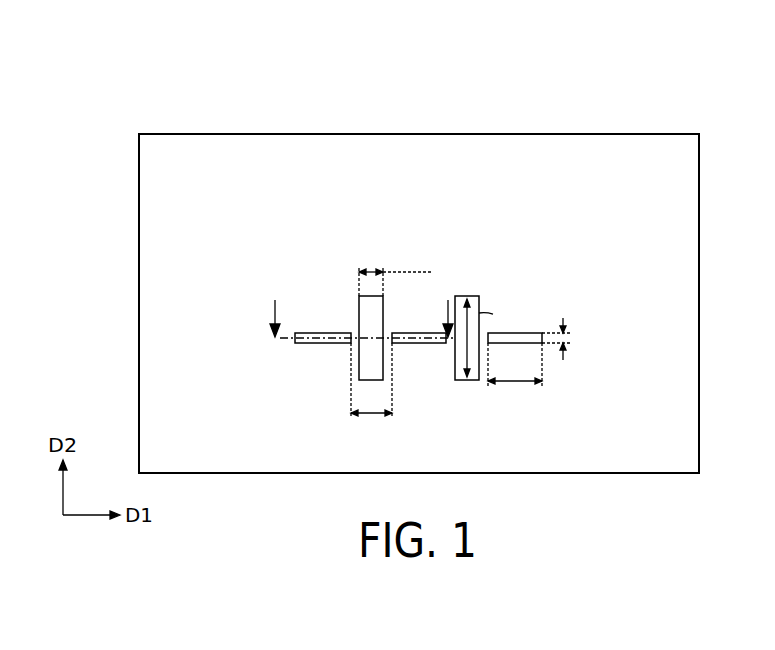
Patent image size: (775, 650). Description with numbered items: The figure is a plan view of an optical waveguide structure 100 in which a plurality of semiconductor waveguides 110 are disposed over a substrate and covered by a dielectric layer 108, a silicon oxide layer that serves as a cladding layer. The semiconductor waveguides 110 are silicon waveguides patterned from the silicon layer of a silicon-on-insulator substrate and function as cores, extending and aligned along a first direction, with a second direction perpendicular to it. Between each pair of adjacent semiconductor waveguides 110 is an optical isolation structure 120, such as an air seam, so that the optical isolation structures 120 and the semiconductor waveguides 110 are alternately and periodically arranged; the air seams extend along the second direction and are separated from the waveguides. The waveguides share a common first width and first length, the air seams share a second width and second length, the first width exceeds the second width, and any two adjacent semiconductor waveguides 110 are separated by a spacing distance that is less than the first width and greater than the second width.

The optical waveguide structure 100 is at (650, 72).
The dielectric layer 108 is at (682, 176).
The semiconductor waveguides 110 is at (309, 332).
The optical isolation structures 120 is at (368, 316).